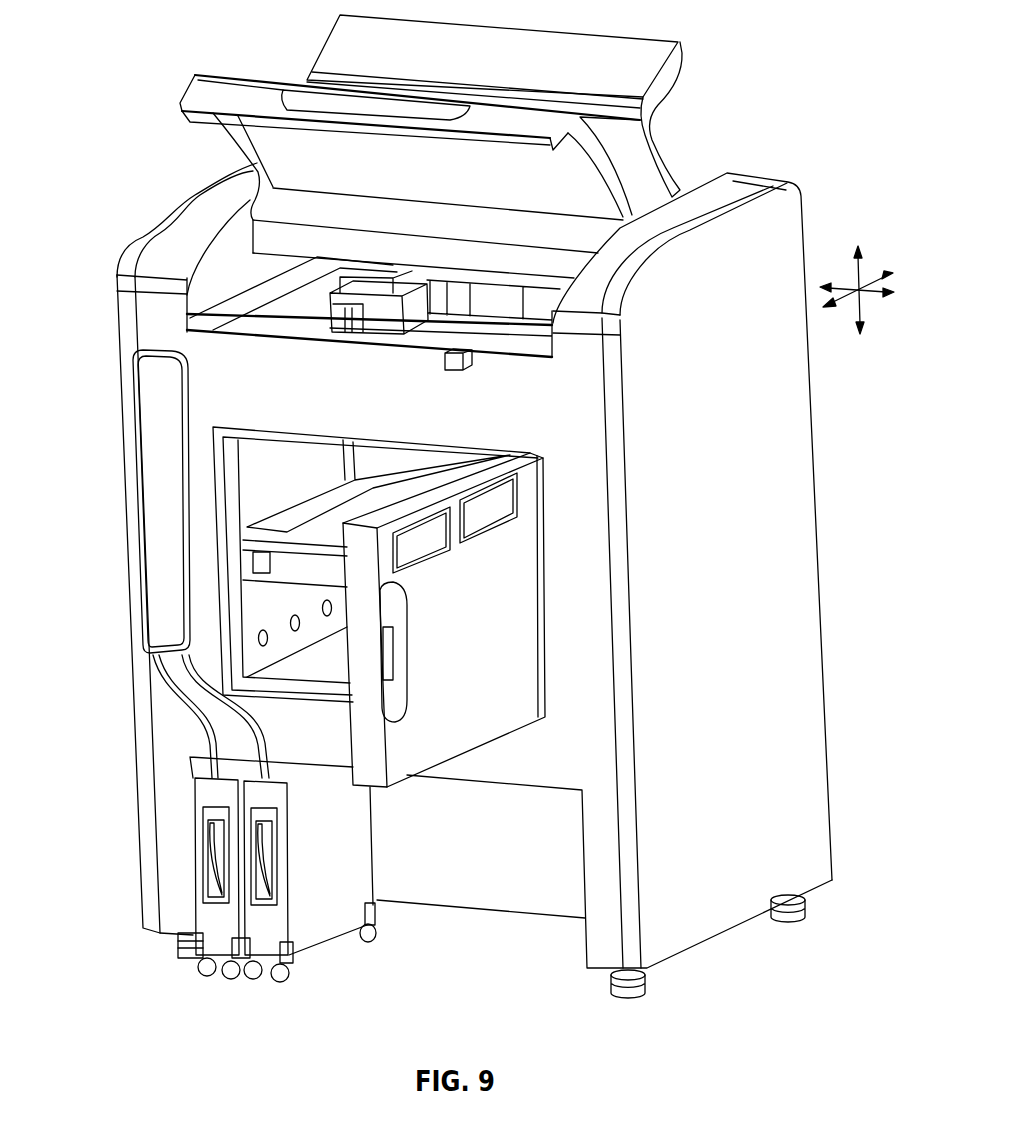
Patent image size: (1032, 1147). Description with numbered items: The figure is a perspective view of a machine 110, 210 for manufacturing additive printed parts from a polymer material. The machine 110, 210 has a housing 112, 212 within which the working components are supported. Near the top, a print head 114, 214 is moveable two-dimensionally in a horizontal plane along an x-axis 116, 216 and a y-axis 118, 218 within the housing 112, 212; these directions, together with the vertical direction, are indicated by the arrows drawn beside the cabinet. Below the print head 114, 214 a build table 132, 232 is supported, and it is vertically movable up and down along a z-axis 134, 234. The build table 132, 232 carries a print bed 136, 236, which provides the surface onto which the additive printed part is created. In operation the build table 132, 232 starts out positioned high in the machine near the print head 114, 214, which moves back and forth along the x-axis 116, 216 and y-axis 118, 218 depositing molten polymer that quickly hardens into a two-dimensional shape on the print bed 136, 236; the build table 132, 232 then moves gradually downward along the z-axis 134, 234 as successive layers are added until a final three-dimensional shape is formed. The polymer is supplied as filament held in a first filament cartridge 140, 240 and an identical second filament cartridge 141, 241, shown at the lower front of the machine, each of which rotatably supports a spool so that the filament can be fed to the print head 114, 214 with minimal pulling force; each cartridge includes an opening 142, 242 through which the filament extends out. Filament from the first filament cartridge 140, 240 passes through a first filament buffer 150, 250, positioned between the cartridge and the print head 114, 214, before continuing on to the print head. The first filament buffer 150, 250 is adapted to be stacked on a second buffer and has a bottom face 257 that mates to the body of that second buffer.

The machine 110 is at (400, 529).
The machine 210 is at (238, 1014).
The housing 112 is at (521, 580).
The housing 212 is at (793, 591).
The print head 114 is at (252, 299).
The print head 214 is at (325, 300).
The x-axis 116 is at (875, 252).
The x-axis 216 is at (866, 288).
The y-axis 118 is at (875, 319).
The y-axis 218 is at (866, 292).
The build table 132 is at (183, 619).
The build table 232 is at (303, 568).
The z-axis 134 is at (836, 232).
The z-axis 234 is at (853, 268).
The print bed 136 is at (263, 498).
The print bed 236 is at (310, 528).
The first filament cartridge 140 is at (204, 869).
The first filament cartridge 240 is at (203, 920).
The second filament cartridge 141 is at (384, 940).
The second filament cartridge 241 is at (313, 938).
The opening 142 is at (149, 756).
The material supply tubes 242 is at (227, 775).
The first filament buffer 150 is at (250, 501).
The first filament buffer 250 is at (250, 501).
The bottom face 257 is at (185, 412).